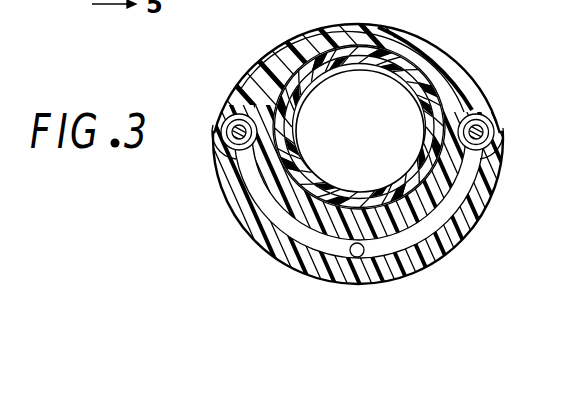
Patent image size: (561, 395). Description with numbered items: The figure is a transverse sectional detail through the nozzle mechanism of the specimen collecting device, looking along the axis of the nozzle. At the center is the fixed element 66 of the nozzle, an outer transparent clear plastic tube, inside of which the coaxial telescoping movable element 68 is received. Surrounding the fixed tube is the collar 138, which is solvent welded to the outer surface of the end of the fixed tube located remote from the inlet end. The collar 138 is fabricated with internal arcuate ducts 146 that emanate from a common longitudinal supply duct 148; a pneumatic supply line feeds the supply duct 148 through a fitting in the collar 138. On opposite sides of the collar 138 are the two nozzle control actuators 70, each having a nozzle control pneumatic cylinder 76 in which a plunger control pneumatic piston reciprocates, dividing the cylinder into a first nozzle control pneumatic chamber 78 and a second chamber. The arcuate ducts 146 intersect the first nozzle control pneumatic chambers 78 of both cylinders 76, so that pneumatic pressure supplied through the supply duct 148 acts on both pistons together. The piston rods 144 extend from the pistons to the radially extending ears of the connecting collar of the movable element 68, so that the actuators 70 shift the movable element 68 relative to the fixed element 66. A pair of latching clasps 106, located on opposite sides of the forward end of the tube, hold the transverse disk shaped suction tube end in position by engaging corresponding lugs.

The fixed element 66 is at (332, 43).
The movable element 68 is at (279, 62).
The nozzle control actuator 70 is at (217, 110).
The nozzle control pneumatic cylinder 76 is at (226, 142).
The first nozzle control pneumatic chamber 78 is at (221, 110).
The latching clasp 106 is at (280, 197).
The collar 138 is at (448, 63).
The piston rod 144 is at (224, 150).
The arcuate duct 146 is at (257, 188).
The supply duct 148 is at (313, 253).